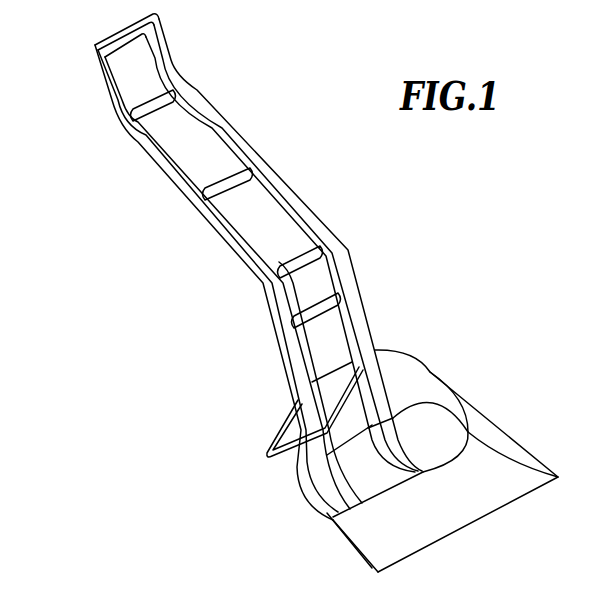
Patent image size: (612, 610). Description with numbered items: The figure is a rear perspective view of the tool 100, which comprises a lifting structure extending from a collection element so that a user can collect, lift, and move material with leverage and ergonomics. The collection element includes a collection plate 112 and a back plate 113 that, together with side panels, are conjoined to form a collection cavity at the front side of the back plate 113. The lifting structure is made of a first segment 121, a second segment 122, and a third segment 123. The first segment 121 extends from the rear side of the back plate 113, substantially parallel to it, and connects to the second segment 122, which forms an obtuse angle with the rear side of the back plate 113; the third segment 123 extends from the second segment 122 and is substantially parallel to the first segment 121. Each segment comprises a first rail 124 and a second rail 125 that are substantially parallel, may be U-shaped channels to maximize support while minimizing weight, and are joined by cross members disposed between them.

The tool 100 is at (278, 101).
The collection plate 112 is at (437, 528).
The back plate 113 is at (328, 390).
The first segment 121 is at (398, 322).
The second segment 122 is at (315, 183).
The third segment 123 is at (108, 133).
The first rail 124 is at (295, 345).
The second rail 125 is at (352, 282).